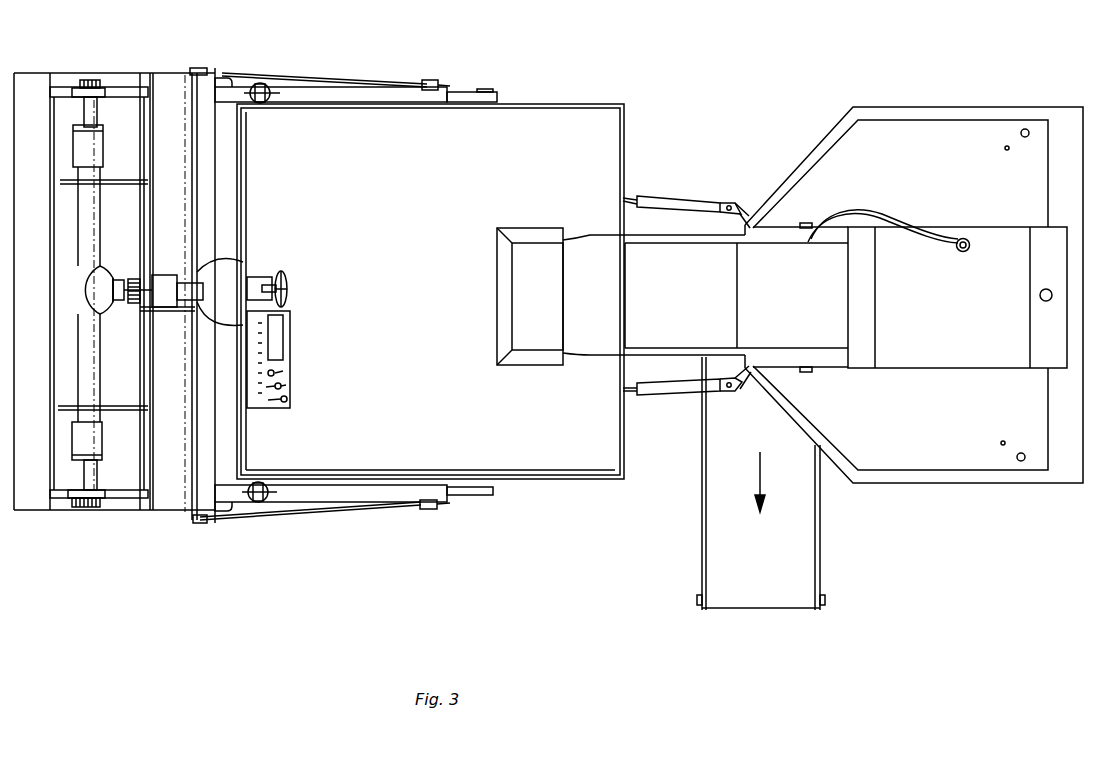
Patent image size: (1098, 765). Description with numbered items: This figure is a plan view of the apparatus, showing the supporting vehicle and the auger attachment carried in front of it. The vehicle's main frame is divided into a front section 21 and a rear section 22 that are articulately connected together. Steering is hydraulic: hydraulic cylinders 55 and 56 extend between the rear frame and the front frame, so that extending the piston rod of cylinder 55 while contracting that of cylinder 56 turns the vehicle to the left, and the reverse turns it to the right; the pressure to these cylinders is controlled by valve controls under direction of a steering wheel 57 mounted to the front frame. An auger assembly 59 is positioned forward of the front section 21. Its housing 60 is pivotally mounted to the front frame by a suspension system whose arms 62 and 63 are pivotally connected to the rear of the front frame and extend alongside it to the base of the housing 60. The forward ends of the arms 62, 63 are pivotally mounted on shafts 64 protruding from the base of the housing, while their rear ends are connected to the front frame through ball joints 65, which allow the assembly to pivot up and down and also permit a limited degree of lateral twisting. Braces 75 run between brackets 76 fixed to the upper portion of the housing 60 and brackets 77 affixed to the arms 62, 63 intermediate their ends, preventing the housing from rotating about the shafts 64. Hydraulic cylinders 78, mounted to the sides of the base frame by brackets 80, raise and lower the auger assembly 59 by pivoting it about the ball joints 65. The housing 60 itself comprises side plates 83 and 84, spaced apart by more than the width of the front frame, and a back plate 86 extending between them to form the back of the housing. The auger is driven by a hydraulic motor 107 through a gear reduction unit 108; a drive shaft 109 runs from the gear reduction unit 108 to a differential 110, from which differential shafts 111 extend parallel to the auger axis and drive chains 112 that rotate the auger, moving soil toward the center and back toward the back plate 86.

The front section 21 is at (381, 199).
The rear section 22 is at (930, 185).
The hydraulic cylinder 55 is at (677, 200).
The hydraulic cylinder 56 is at (664, 390).
The steering wheel 57 is at (286, 285).
The auger assembly 59 is at (136, 155).
The housing 60 is at (129, 89).
The arm 62 is at (336, 90).
The arm 63 is at (375, 504).
The shaft 64 is at (229, 80).
The ball joint 65 is at (496, 92).
The brace 75 is at (286, 72).
The bracket 76 is at (204, 70).
The bracket 77 is at (432, 81).
The hydraulic cylinder 78 is at (266, 100).
The bracket 80 is at (261, 102).
The side plate 83 is at (94, 87).
The side plate 84 is at (122, 509).
The back plate 86 is at (182, 205).
The hydraulic motor 107 is at (186, 282).
The gear reduction unit 108 is at (163, 318).
The drive shaft 109 is at (134, 318).
The differential 110 is at (77, 306).
The differential shaft 111 is at (96, 106).
The chain 112 is at (84, 80).